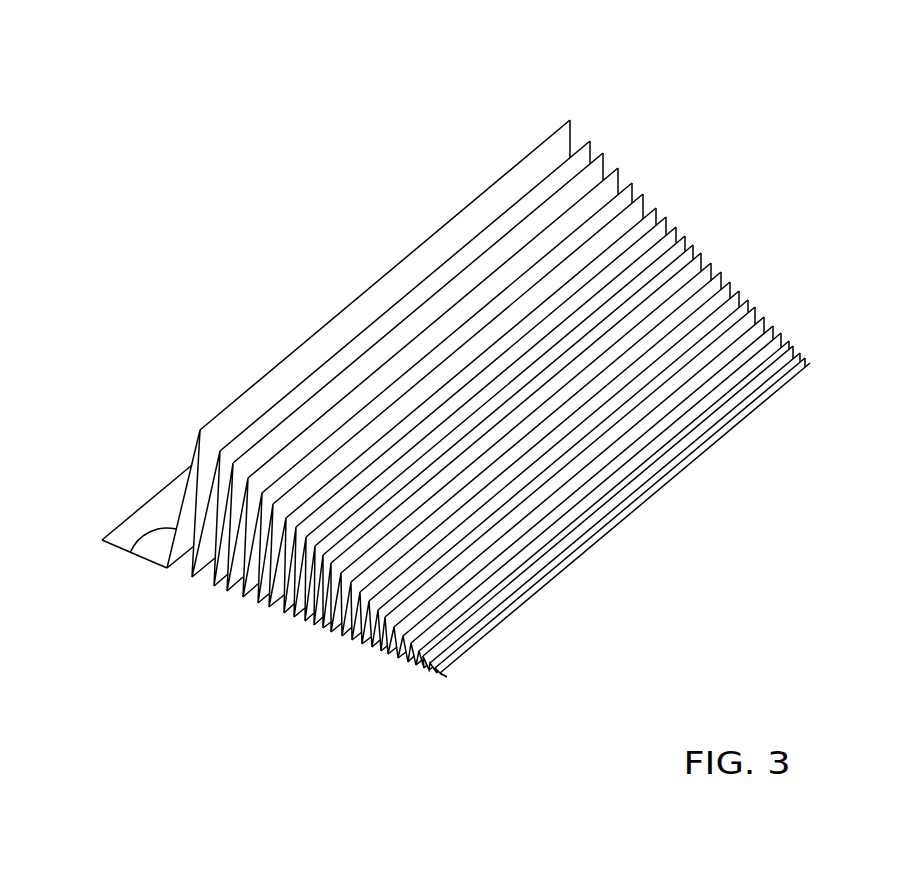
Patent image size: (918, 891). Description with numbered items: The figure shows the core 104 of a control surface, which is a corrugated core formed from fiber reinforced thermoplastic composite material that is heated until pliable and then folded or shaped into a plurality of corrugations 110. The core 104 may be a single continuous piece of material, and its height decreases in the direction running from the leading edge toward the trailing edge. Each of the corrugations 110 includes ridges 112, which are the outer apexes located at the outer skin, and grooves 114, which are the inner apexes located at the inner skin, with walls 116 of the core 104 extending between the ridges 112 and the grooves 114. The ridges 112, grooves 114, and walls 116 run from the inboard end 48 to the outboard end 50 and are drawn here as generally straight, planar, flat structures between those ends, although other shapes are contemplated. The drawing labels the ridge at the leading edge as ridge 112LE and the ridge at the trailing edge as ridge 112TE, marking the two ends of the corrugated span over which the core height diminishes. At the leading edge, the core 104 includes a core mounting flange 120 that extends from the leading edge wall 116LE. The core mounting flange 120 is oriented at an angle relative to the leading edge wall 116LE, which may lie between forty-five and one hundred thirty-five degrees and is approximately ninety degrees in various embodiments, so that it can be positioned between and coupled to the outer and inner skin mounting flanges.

The core 104 is at (300, 135).
The corrugations 110 is at (655, 172).
The ridges 112 is at (623, 215).
The leading edge pleat panel 112LE is at (277, 362).
The trailing edge pleat panel 112TE is at (480, 641).
The grooves 114 is at (193, 577).
The walls 116 is at (223, 430).
The leading edge wall 116LE is at (185, 470).
The core mounting flange 120 is at (121, 527).
The inboard end 48 is at (750, 305).
The outboard end 50 is at (167, 568).